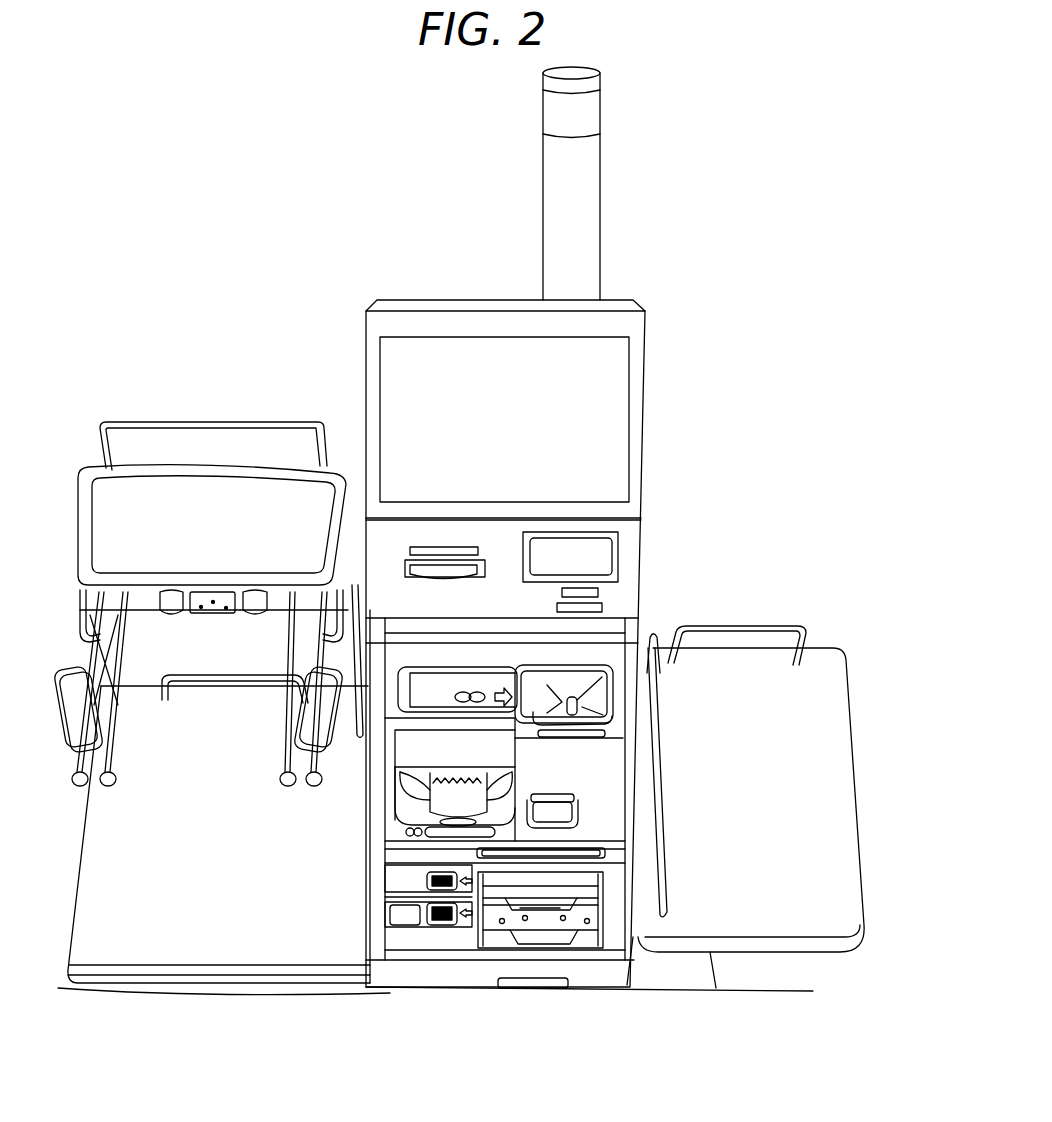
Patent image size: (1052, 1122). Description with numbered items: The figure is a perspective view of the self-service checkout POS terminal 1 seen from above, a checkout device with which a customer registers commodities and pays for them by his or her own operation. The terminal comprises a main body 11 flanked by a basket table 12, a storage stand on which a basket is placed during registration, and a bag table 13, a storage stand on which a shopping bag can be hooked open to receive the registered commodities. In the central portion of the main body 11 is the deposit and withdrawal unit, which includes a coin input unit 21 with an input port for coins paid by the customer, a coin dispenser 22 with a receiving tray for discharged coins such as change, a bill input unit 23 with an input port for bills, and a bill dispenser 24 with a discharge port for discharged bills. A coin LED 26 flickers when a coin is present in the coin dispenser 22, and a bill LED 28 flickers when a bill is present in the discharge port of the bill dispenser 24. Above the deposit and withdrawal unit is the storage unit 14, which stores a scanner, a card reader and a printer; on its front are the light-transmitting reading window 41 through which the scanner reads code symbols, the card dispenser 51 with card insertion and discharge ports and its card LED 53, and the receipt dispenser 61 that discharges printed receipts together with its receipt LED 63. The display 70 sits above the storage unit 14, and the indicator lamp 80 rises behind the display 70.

The self-service checkout POS terminal 1 is at (721, 221).
The main body 11 is at (655, 283).
The basket table 12 is at (842, 629).
The bag table 13 is at (125, 415).
The storage unit 14 is at (638, 520).
The coin input unit 21 is at (600, 713).
The coin dispenser 22 is at (418, 797).
The bill input unit 23 is at (460, 830).
The bill dispenser 24 is at (553, 890).
The coin LED 26 is at (495, 920).
The bill LED 28 is at (565, 867).
The reading window 41 is at (595, 553).
The card dispenser 51 is at (602, 607).
The card LED 53 is at (598, 592).
The receipt dispenser 61 is at (420, 570).
The receipt LED 63 is at (447, 547).
The display 70 is at (634, 436).
The indicator lamp 80 is at (543, 164).